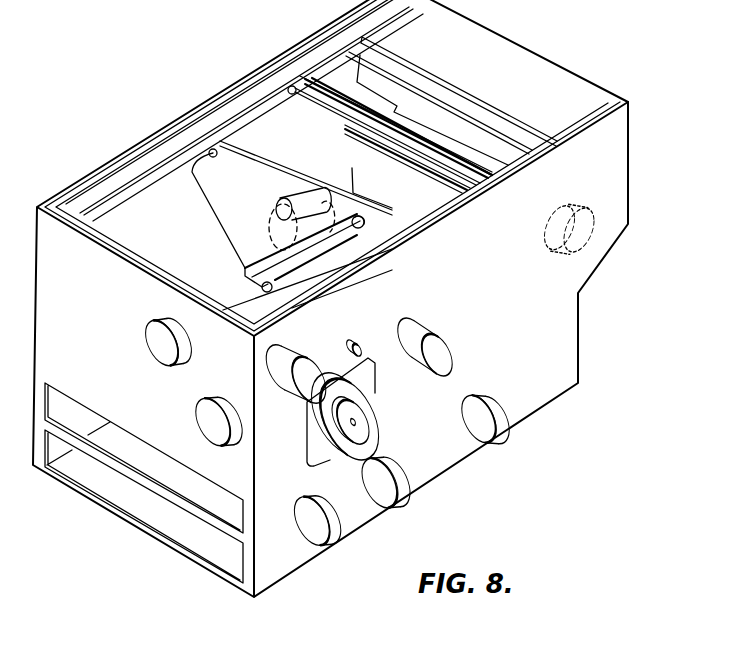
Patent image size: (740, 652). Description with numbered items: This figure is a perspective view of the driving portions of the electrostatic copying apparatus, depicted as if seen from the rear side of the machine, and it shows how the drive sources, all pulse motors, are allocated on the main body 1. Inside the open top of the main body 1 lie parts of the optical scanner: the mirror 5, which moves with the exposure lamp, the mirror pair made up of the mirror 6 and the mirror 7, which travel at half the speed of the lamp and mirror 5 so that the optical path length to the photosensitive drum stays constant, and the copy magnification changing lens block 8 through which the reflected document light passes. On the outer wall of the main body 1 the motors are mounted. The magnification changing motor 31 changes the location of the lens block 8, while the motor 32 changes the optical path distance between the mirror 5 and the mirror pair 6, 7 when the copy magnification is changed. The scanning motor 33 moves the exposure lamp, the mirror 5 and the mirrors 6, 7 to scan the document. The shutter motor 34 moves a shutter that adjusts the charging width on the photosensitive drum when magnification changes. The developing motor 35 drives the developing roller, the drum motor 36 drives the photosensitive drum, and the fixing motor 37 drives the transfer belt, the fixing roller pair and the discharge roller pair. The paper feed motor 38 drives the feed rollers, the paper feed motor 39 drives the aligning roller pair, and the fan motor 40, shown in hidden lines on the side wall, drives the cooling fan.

The main body 1 is at (619, 163).
The mirror 5 is at (348, 90).
The mirror 6 is at (463, 88).
The mirror 7 is at (525, 152).
The copy magnification changing lens block 8 is at (312, 193).
The magnification changing motor 31 is at (158, 348).
The motor 32 is at (222, 402).
The scanning motor 33 is at (300, 357).
The shutter motor 34 is at (365, 340).
The developing motor 35 is at (373, 403).
The drum motor 36 is at (442, 325).
The fixing motor 37 is at (497, 432).
The paper feed motor 38 is at (325, 528).
The paper feed motor 39 is at (397, 495).
The fan motor 40 is at (583, 245).